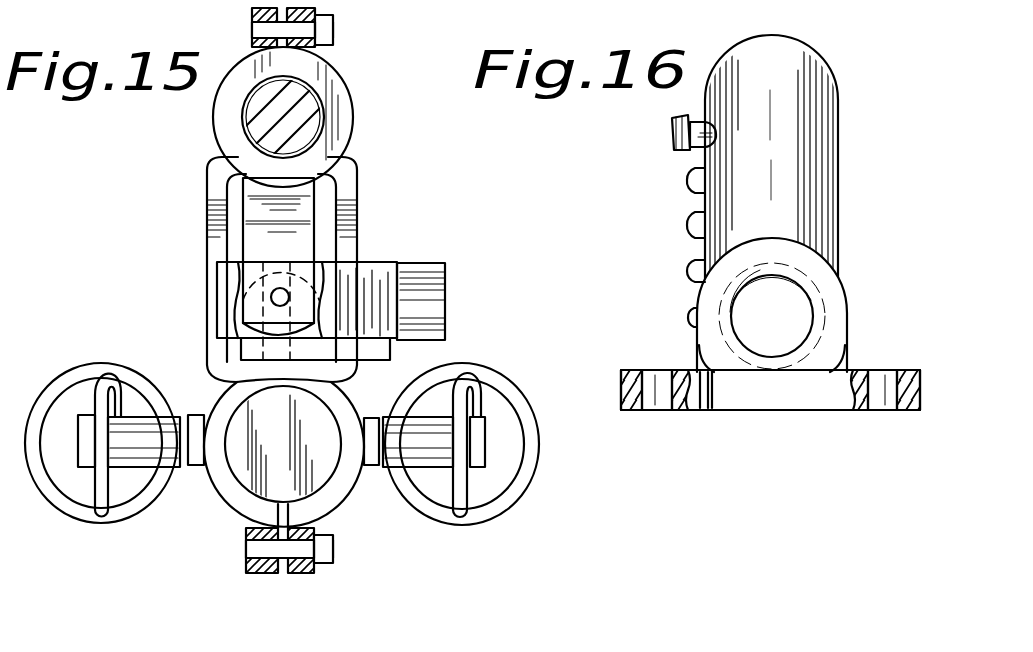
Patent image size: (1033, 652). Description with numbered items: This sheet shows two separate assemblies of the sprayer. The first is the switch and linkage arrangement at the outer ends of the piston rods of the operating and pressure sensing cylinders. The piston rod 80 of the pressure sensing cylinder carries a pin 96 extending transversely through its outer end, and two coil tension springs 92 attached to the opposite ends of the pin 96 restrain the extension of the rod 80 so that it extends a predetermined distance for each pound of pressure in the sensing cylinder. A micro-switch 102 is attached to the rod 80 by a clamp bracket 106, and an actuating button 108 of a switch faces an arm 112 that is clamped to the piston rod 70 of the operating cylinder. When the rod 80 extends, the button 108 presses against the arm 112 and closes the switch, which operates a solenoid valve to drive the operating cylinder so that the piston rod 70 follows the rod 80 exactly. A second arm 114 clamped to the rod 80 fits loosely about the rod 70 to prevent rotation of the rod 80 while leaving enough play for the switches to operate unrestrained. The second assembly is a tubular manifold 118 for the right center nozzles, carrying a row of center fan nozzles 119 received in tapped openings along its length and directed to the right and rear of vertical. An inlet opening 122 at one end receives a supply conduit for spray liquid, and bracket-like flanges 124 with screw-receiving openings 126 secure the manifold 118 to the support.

In FIG. 15, the piston rod 70 is at (343, 110).
In FIG. 15, the arm 114 is at (358, 176).
In FIG. 15, the arm 112 is at (320, 238).
In FIG. 15, the actuating button 108 is at (288, 290).
In FIG. 15, the micro-switch 102 is at (415, 262).
In FIG. 15, the clamp bracket 106 is at (343, 510).
In FIG. 15, the piston rod 80 is at (245, 485).
In FIG. 15, the coil tension spring 92 is at (64, 513).
In FIG. 15, the pin 96 is at (434, 468).
In FIG. 16, the tubular manifold 118 is at (840, 192).
In FIG. 16, the center fan nozzle 119 is at (672, 134).
In FIG. 16, the inlet opening 122 is at (760, 342).
In FIG. 16, the bracket-like flange 124 is at (640, 412).
In FIG. 16, the screw-receiving opening 126 is at (653, 375).